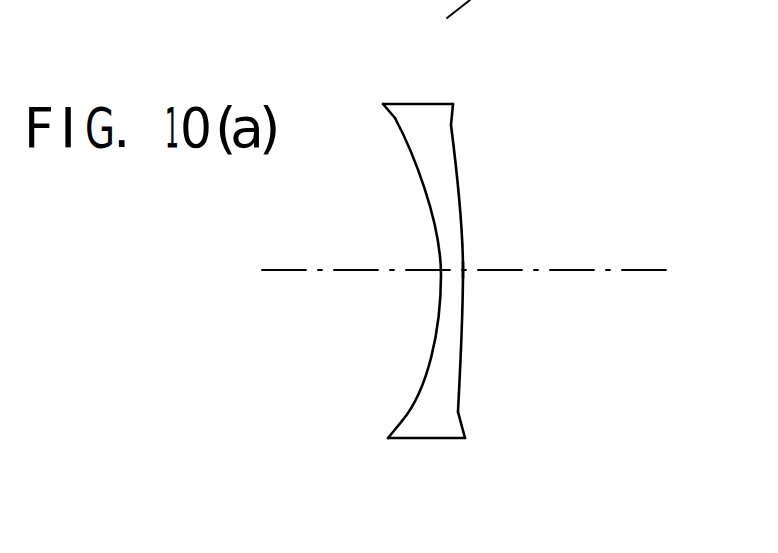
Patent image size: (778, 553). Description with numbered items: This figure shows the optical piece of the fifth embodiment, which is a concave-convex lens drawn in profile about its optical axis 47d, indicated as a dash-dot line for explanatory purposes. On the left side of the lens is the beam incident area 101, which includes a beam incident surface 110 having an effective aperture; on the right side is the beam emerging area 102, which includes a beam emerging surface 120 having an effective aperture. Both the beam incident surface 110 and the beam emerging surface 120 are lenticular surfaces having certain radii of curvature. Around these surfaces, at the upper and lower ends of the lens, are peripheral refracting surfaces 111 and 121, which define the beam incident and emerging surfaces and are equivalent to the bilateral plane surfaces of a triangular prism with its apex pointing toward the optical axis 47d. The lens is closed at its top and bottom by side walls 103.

The optical axis 47d is at (296, 276).
The beam incident area 101 is at (425, 261).
The beam emerging area 102 is at (463, 260).
The side walls 103 is at (422, 102).
The beam incident surface 110 is at (436, 319).
The peripheral refracting surface 111 is at (390, 120).
The beam emerging surface 120 is at (460, 189).
The peripheral refracting surface 121 is at (455, 122).